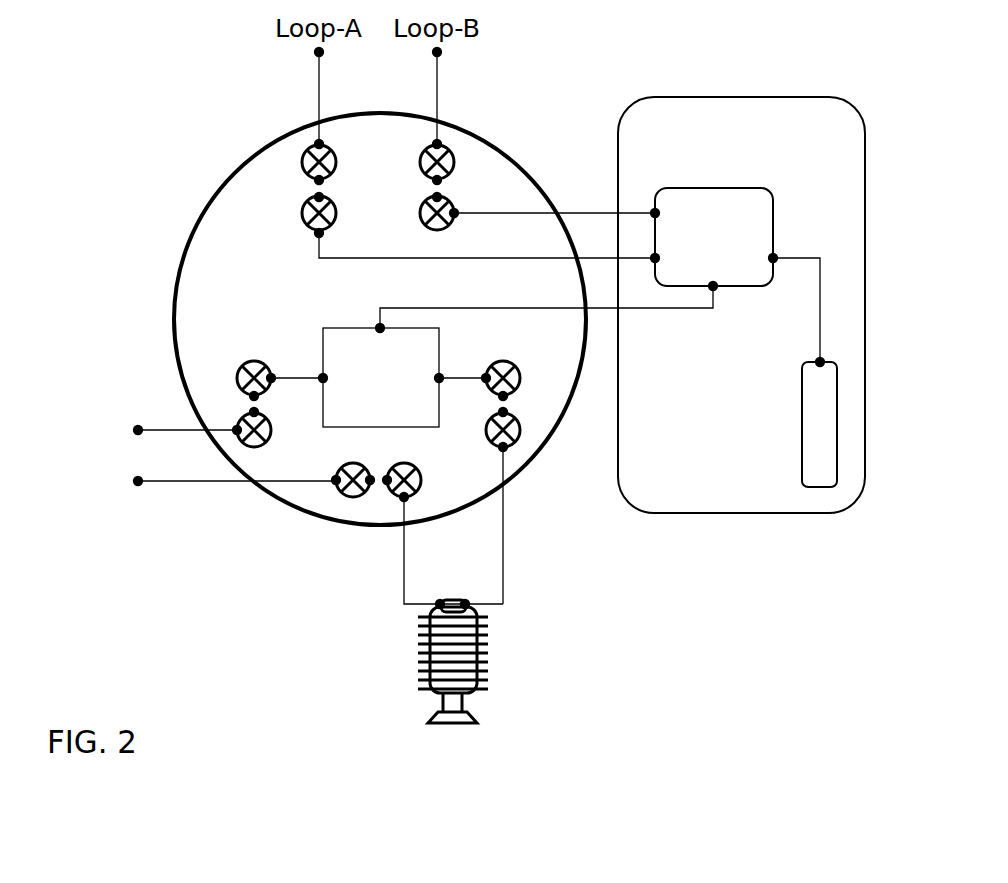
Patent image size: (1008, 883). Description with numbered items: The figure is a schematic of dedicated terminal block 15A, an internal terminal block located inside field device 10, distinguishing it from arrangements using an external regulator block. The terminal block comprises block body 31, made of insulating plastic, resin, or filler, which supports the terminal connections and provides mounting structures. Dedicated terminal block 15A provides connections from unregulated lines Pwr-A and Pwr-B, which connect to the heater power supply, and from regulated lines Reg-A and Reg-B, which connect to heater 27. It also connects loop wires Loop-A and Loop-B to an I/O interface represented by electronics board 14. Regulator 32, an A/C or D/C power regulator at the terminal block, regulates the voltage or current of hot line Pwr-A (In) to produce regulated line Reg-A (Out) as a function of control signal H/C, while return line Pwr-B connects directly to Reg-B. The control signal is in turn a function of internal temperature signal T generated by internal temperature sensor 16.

The field device 10 is at (832, 121).
The electronics board 14 is at (680, 188).
The dedicated terminal block 15A is at (141, 167).
The internal temperature sensor 16 is at (802, 380).
The heater 27 is at (524, 702).
The block body 31 is at (195, 315).
The regulator 32 is at (323, 350).